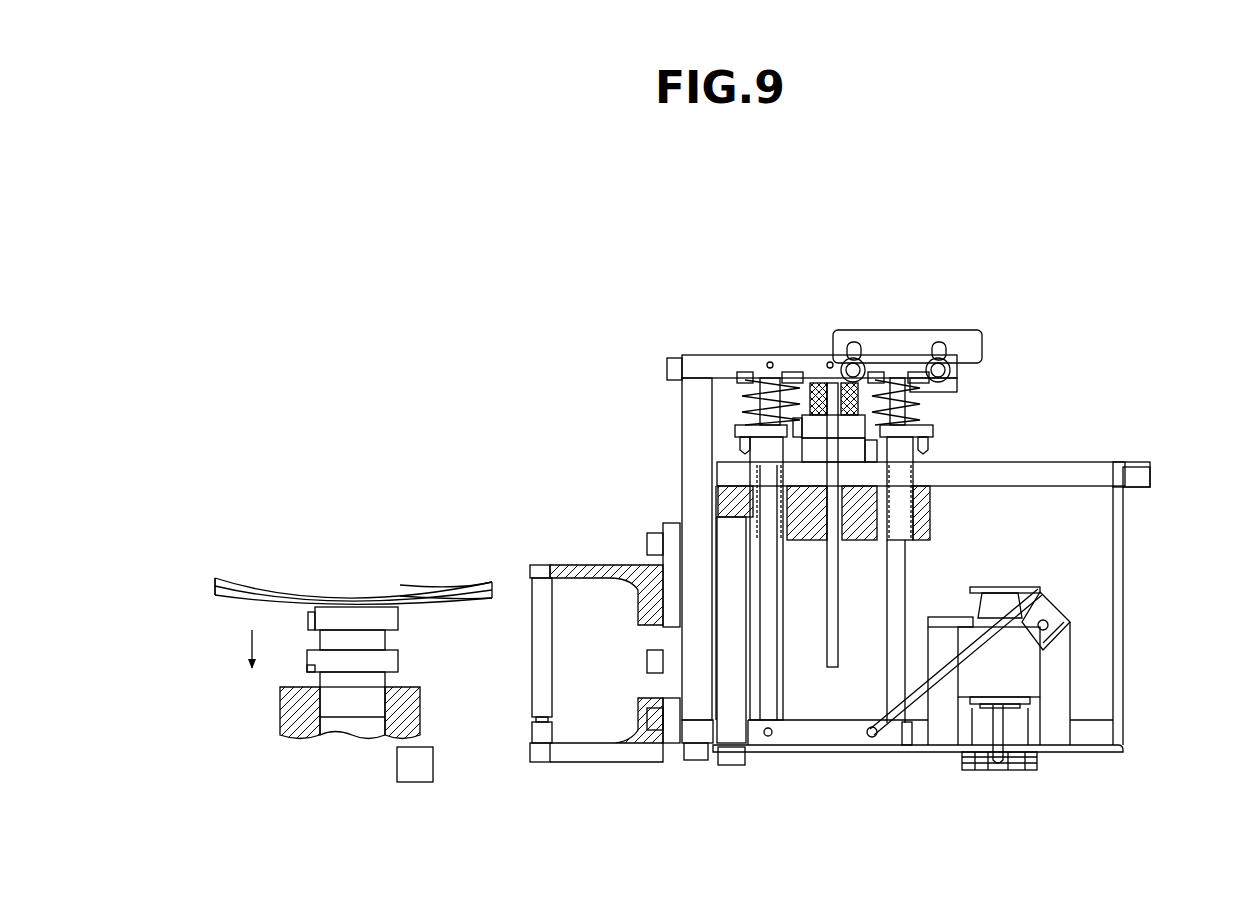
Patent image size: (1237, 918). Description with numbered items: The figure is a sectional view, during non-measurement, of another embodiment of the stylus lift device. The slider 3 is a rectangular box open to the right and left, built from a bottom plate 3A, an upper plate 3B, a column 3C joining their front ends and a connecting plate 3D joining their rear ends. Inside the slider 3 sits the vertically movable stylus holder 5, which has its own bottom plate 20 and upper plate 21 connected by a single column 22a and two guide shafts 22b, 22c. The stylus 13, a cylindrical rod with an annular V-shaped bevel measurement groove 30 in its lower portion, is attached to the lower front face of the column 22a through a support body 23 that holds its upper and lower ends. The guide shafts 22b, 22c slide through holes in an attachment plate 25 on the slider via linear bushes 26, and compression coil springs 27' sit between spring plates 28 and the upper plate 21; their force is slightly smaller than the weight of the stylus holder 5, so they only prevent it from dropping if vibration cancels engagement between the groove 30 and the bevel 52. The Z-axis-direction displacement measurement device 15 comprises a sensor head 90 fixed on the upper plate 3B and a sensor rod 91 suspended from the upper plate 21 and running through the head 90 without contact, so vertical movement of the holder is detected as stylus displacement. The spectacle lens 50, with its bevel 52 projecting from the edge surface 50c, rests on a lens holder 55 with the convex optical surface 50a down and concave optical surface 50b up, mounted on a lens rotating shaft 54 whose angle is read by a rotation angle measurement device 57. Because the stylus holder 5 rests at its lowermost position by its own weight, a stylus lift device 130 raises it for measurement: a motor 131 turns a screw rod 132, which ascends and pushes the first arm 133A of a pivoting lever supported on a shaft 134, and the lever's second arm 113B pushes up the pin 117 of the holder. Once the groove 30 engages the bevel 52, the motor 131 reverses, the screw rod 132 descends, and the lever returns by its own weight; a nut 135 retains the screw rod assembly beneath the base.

The slider 3 is at (966, 626).
The bottom plate 3A is at (1100, 753).
The upper plate 3B is at (1095, 462).
The column 3C is at (730, 723).
The connecting plate 3D is at (1122, 713).
The stylus holder 5 is at (801, 507).
The stylus 13 is at (545, 657).
The Z-axis-direction displacement measurement device 15 is at (920, 222).
The bottom plate 20 is at (820, 737).
The upper plate 21 is at (723, 367).
The column 22a is at (693, 408).
The guide shaft 22b is at (768, 693).
The guide shaft 22c is at (892, 658).
The support body 23 is at (577, 565).
The attachment plate 25 is at (930, 518).
The linear bush 26 is at (913, 502).
The spring 27' is at (847, 342).
The spring plate 28 is at (735, 427).
The bevel measurement groove 30 is at (566, 644).
The spectacle lens 50 is at (250, 566).
The convex optical surface 50a is at (447, 608).
The concave optical surface 50b is at (443, 588).
The edge surface 50c is at (213, 580).
The bevel 52 is at (213, 589).
The lens rotating shaft 54 is at (422, 710).
The lens holder 55 is at (340, 707).
The rotation angle measurement device 57 is at (417, 767).
The sensor head 90 is at (815, 383).
The sensor rod 91 is at (838, 450).
The link arm 113B is at (918, 712).
The pin 117 is at (866, 745).
The stylus lift device 130 is at (1070, 692).
The motor 131 is at (1042, 673).
The screw rod 132 is at (1000, 717).
The first arm 133A is at (1007, 587).
The shaft 134 is at (1047, 628).
The nut 135 is at (1018, 772).